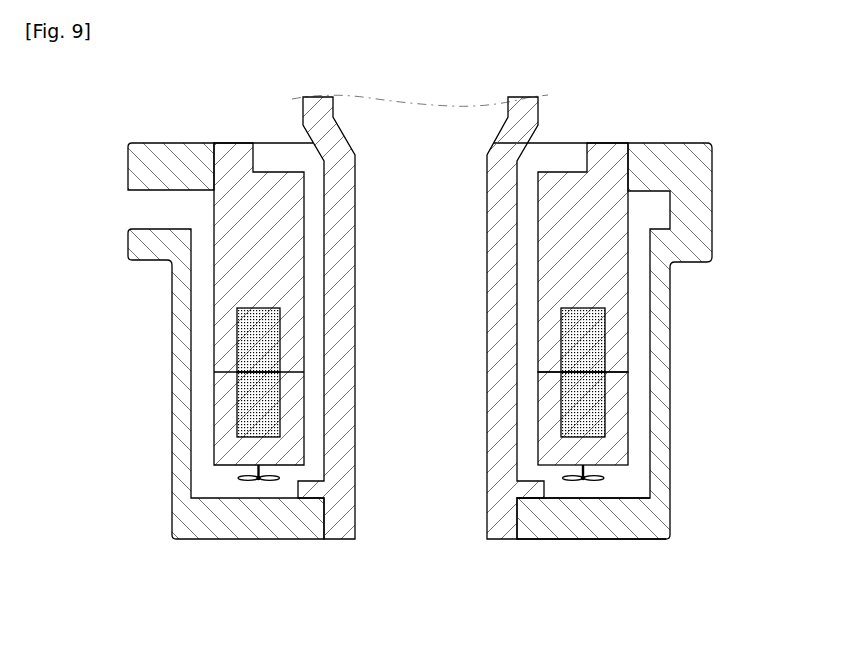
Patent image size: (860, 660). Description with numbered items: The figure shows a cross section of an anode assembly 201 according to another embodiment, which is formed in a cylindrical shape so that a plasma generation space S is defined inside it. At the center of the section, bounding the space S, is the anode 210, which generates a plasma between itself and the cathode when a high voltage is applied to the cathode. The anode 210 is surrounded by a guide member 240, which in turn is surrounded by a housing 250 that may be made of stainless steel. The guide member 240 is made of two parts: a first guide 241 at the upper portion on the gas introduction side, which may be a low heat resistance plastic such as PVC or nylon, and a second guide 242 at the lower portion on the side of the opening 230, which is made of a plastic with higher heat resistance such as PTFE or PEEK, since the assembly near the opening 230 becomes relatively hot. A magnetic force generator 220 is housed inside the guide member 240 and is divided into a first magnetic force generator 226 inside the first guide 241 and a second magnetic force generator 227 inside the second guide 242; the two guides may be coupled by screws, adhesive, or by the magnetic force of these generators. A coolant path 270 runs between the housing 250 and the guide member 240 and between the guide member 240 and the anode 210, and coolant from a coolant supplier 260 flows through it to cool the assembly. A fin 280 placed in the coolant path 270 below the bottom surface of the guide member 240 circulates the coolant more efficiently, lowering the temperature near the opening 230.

The plasma generation space S is at (430, 303).
The anode assembly 201 is at (582, 540).
The anode 210 is at (502, 530).
The magnetic force generator 220 is at (238, 319).
The first magnetic force generator 226 is at (248, 354).
The second magnetic force generator 227 is at (248, 415).
The opening 230 is at (405, 520).
The guide member 240 is at (598, 143).
The first guide 241 is at (618, 298).
The second guide 242 is at (617, 410).
The housing 250 is at (690, 217).
The coolant supplier 260 is at (133, 208).
The coolant path 270 is at (618, 486).
The fin 280 is at (243, 481).